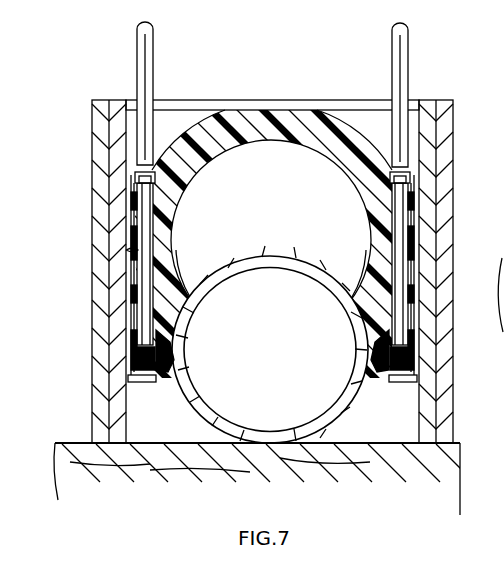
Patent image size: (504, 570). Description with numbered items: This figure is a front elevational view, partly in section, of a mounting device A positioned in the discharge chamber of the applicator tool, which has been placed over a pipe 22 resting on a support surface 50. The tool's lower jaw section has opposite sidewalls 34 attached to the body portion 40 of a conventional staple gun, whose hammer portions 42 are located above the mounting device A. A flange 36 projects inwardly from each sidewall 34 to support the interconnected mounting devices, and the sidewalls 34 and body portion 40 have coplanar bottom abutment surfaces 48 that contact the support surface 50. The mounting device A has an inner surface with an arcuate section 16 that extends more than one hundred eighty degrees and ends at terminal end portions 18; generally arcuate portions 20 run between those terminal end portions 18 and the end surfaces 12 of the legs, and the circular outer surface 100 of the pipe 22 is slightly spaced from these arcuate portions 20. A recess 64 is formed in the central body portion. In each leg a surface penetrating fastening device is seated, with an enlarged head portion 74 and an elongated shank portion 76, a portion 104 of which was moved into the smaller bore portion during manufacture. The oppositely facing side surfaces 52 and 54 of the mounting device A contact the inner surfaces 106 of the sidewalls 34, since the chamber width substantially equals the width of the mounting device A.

The end surface 12 is at (400, 57).
The arcuate section 16 is at (270, 134).
The terminal end portion 18 is at (194, 280).
The generally arcuate portion 20 is at (165, 373).
The pipe 22 is at (232, 436).
The sidewall 34 is at (109, 389).
The flange 36 is at (141, 383).
The body portion 40 is at (448, 133).
The hammer portion 42 is at (155, 52).
The bottom abutment surface 48 is at (100, 447).
The support surface 50 is at (346, 450).
The side surface 52 is at (137, 253).
The side surface 54 is at (406, 251).
The recess 64 is at (126, 182).
The head portion 74 is at (414, 176).
The shank portion 76 is at (137, 291).
The circular outer surface 100 is at (264, 262).
The portion of the shank portion 104 is at (140, 338).
The inner surface 106 is at (130, 447).
The mounting device A is at (310, 138).